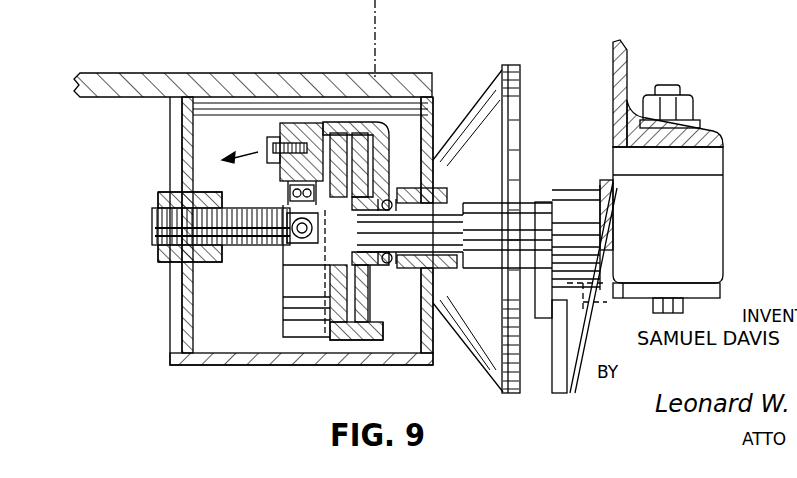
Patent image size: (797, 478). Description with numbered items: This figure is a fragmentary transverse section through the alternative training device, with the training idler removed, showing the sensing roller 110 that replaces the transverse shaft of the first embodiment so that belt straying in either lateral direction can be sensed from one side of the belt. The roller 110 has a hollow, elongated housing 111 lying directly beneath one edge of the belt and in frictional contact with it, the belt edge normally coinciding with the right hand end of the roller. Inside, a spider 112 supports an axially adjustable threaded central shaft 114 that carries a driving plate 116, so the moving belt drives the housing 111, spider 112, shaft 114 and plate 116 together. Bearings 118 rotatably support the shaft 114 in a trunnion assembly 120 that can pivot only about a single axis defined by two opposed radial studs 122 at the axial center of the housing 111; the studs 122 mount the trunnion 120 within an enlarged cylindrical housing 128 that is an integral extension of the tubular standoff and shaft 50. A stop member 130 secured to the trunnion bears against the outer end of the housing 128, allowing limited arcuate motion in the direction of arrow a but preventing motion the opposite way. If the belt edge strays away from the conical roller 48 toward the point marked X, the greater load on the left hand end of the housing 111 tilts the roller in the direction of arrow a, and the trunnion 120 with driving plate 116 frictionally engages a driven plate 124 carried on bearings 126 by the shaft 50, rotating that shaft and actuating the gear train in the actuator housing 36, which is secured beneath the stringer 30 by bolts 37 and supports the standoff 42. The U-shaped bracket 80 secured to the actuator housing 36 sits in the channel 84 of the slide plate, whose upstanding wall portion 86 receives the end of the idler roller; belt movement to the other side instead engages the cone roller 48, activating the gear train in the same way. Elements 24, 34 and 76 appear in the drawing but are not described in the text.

The mounting plate 24 is at (106, 90).
The stringer 30 is at (624, 64).
The motor mounting flange 34 is at (785, 127).
The housing 36 is at (715, 223).
The bolts 37 is at (688, 108).
The standoff 42 is at (577, 195).
The conical roller 48 is at (483, 112).
The stub shaft 50 is at (447, 222).
The nut 76 is at (655, 307).
The U-shaped bracket 80 is at (590, 262).
The channel 84 is at (553, 300).
The upstanding wall portion 86 is at (537, 202).
The roller 110 is at (178, 376).
The housing 111 is at (220, 360).
The spider 112 is at (186, 312).
The threaded central shaft 114 is at (150, 232).
The driving plate 116 is at (333, 322).
The bearings 118 is at (295, 188).
The trunnion assembly 120 is at (318, 147).
The radial studs 122 is at (300, 238).
The driven plate 124 is at (365, 305).
The bearings 126 is at (395, 197).
The cylindrical housing 128 is at (282, 146).
The stop member 130 is at (268, 140).
The arrow a is at (240, 163).
The point X is at (380, 50).